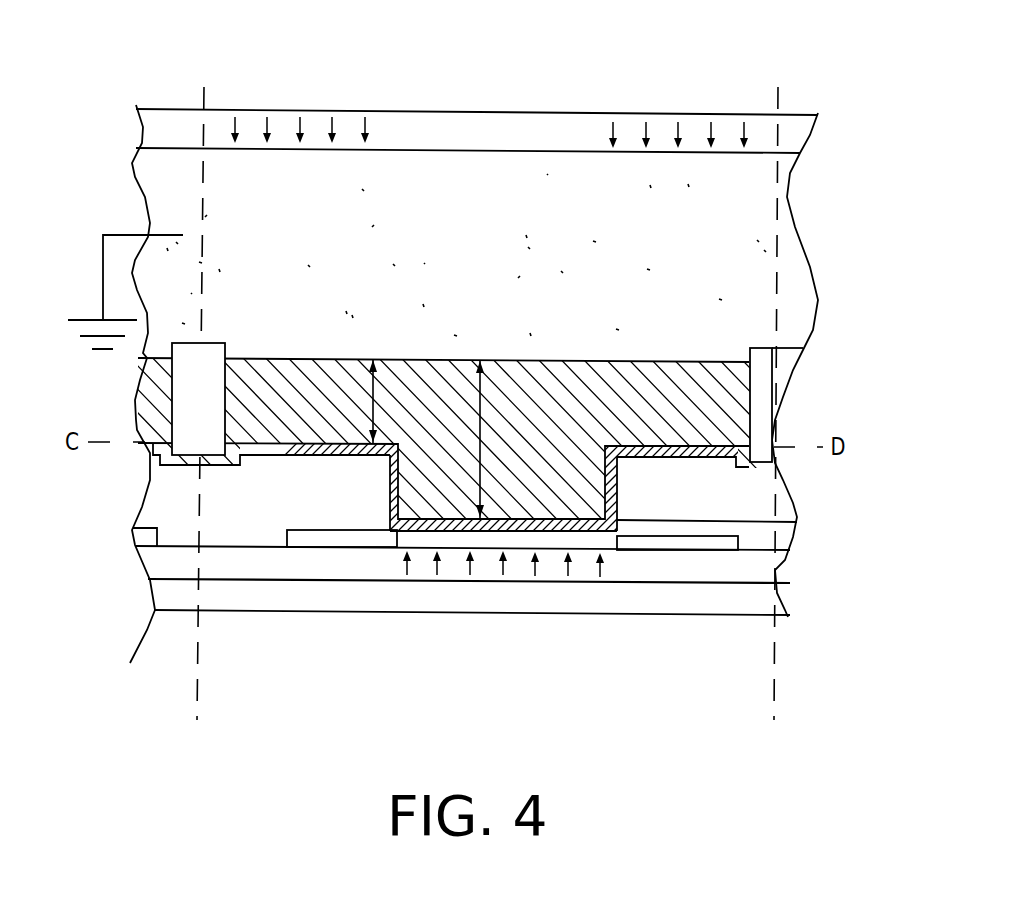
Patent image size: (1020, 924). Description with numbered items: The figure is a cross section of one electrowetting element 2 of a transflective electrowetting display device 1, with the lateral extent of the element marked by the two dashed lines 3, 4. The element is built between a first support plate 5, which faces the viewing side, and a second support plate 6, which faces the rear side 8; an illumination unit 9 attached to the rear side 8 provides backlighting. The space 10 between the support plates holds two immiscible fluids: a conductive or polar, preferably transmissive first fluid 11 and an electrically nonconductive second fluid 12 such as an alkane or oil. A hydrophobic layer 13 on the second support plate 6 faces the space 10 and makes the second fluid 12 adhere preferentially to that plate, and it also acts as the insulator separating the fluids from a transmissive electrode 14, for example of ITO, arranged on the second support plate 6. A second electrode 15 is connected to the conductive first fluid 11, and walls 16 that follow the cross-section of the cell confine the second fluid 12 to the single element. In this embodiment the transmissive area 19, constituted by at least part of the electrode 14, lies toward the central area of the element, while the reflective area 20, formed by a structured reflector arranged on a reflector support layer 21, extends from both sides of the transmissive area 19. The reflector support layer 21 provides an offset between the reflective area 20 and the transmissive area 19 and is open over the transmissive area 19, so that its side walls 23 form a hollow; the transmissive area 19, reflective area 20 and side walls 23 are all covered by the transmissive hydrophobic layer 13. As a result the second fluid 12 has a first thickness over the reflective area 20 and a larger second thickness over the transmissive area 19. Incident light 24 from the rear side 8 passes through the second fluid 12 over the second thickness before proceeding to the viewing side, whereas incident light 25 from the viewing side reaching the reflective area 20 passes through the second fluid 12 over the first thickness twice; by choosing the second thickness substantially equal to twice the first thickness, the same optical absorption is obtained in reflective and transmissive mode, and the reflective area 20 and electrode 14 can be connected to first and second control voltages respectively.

The transflective electrowetting display device 1 is at (436, 92).
The electrowetting element 2 is at (537, 112).
The dashed line 3 is at (206, 98).
The dashed line 4 is at (780, 98).
The first support plate 5 is at (588, 134).
The second support plate 6 is at (642, 560).
The rear side 8 is at (550, 583).
The illumination unit 9 is at (597, 598).
The space 10 is at (735, 220).
The first fluid 11 is at (180, 207).
The second fluid 12 is at (612, 368).
The hydrophobic layer 13 is at (235, 463).
The electrode 14 is at (307, 540).
The second electrode 15 is at (103, 262).
The walls 16 is at (183, 380).
The transmissive area 19 is at (503, 553).
The reflective area 20 is at (227, 487).
The reflector support layer 21 is at (152, 570).
The side walls 23 is at (387, 480).
The incident light 24 is at (470, 580).
The incident light 25 is at (286, 121).